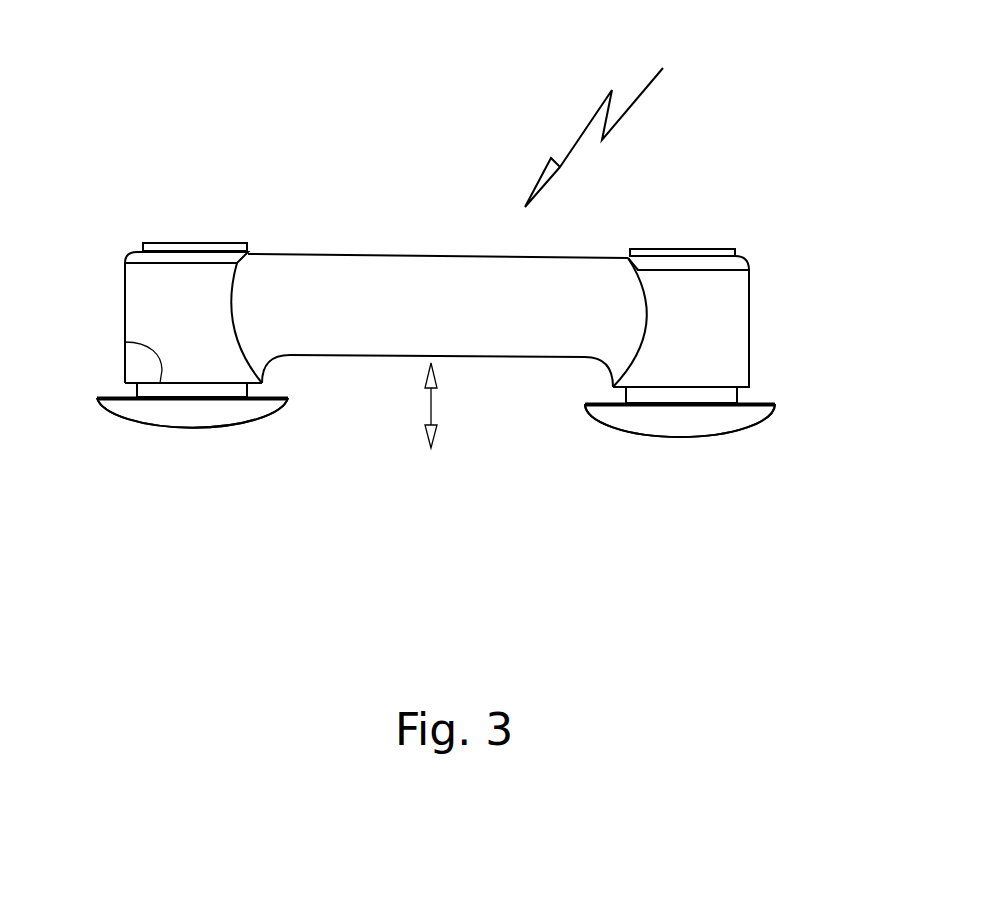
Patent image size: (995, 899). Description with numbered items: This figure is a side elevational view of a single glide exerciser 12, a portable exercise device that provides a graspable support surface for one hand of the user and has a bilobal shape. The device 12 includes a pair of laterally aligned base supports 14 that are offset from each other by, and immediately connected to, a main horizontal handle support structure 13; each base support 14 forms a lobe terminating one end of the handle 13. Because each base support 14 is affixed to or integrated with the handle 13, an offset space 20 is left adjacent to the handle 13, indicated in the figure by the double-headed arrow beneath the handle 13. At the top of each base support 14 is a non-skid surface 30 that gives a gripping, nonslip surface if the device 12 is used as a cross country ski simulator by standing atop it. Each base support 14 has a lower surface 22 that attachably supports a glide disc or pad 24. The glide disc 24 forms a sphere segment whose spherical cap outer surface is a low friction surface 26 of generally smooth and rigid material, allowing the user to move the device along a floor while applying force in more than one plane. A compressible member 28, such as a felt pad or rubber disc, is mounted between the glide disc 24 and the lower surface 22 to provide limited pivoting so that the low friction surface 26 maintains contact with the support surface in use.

The glide exerciser 12 is at (605, 122).
The main horizontal handle support structure 13 is at (407, 285).
The base support 14 is at (138, 253).
The offset space 20 is at (431, 408).
The lower surface 22 is at (125, 342).
The glide disc 24 is at (732, 420).
The low friction surface 26 is at (198, 430).
The compressible member 28 is at (135, 396).
The non-skid surface 30 is at (190, 243).